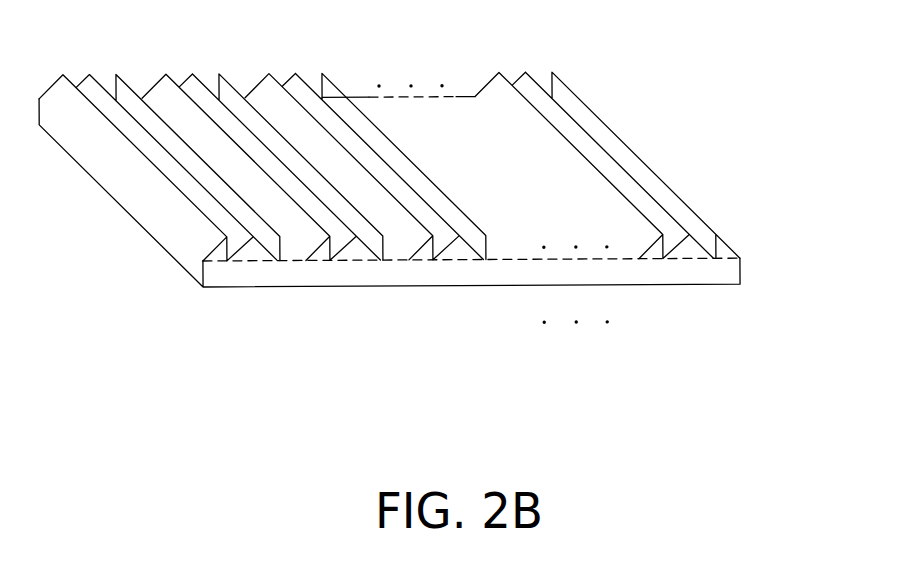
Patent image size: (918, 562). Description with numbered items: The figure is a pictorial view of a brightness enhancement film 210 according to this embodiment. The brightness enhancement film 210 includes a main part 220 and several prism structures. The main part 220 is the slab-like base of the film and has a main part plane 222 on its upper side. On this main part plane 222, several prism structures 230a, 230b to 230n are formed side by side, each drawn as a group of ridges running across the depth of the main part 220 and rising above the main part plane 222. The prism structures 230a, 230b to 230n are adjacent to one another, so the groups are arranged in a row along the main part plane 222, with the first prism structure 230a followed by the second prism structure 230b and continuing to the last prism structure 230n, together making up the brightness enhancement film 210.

The brightness enhancement film 210 is at (765, 40).
The main part 220 is at (731, 274).
The main part plane 222 is at (555, 261).
The prism structure 230a is at (204, 187).
The prism structure 230b is at (412, 187).
The prism structure 230n is at (637, 185).